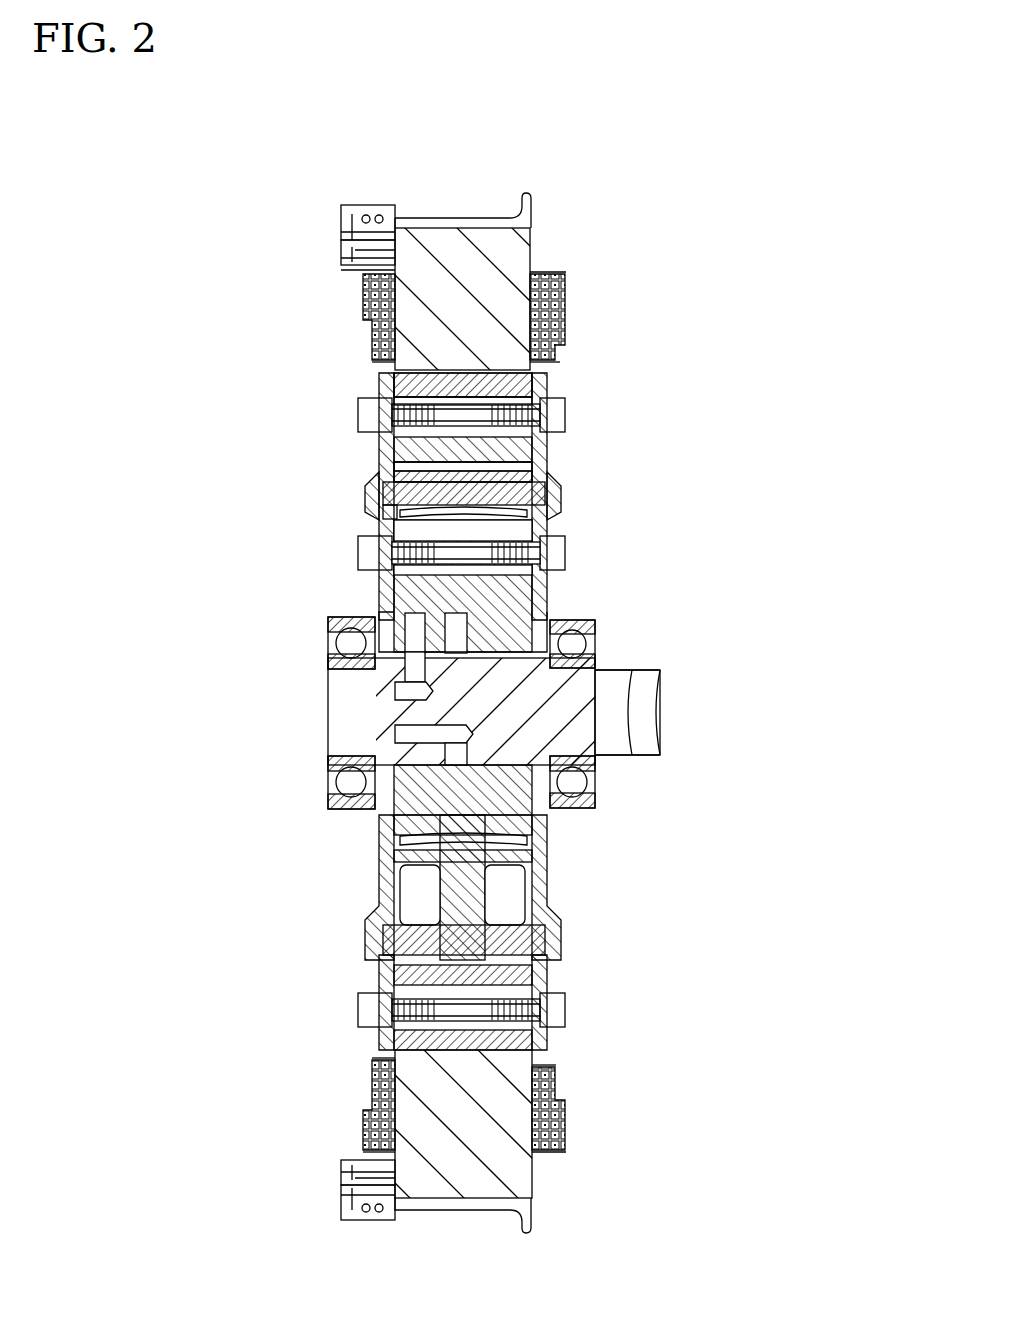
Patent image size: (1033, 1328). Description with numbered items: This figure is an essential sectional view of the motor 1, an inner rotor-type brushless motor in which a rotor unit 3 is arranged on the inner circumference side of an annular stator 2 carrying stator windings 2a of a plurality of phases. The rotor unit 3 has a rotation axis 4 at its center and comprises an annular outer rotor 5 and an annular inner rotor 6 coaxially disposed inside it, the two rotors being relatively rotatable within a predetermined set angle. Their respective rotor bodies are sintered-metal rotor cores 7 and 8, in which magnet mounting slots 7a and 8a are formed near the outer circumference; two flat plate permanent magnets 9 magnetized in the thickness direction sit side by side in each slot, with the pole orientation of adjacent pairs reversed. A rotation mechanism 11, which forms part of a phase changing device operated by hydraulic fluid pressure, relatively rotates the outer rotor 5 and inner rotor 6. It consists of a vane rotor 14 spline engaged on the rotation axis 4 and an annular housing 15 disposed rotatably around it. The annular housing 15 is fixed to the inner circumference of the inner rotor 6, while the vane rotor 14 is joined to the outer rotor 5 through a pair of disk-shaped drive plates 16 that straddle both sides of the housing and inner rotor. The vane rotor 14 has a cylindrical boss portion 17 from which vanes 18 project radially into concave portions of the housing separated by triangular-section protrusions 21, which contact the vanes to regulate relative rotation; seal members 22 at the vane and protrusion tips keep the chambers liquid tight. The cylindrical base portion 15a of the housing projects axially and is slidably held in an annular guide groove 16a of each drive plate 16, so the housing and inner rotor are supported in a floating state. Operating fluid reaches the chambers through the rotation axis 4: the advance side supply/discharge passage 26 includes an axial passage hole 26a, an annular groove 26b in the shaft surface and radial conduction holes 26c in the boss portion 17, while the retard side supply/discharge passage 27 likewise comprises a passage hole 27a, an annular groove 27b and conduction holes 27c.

The motor 1 is at (654, 295).
The stator 2 is at (437, 232).
The stator windings 2a is at (372, 292).
The rotor unit 3 is at (641, 372).
The rotation axis 4 is at (328, 695).
The outer rotor 5 is at (542, 380).
The inner rotor 6 is at (542, 468).
The rotor core 7 is at (403, 412).
The magnet mounting slots 7a is at (400, 383).
The rotor core 8 is at (385, 480).
The magnet mounting slots 8a is at (405, 462).
The permanent magnets 9 is at (395, 468).
The rotation mechanism 11 is at (727, 436).
The vane rotor 14 is at (537, 520).
The annular housing 15 is at (525, 937).
The base portion 15a is at (545, 487).
The drive plates 16 is at (385, 582).
The annular guide groove 16a is at (385, 503).
The boss portion 17 is at (510, 805).
The vanes 18 is at (385, 515).
The protrusion 21 is at (470, 868).
The seal member 22 is at (457, 552).
The advance side supply/discharge passage 26 is at (395, 691).
The passage hole 26a is at (393, 740).
The annular groove 26b is at (397, 655).
The conduction holes 26c is at (405, 635).
The retard side supply/discharge passage 27 is at (408, 695).
The passage hole 27a is at (412, 760).
The annular groove 27b is at (640, 682).
The conduction holes 27c is at (457, 637).